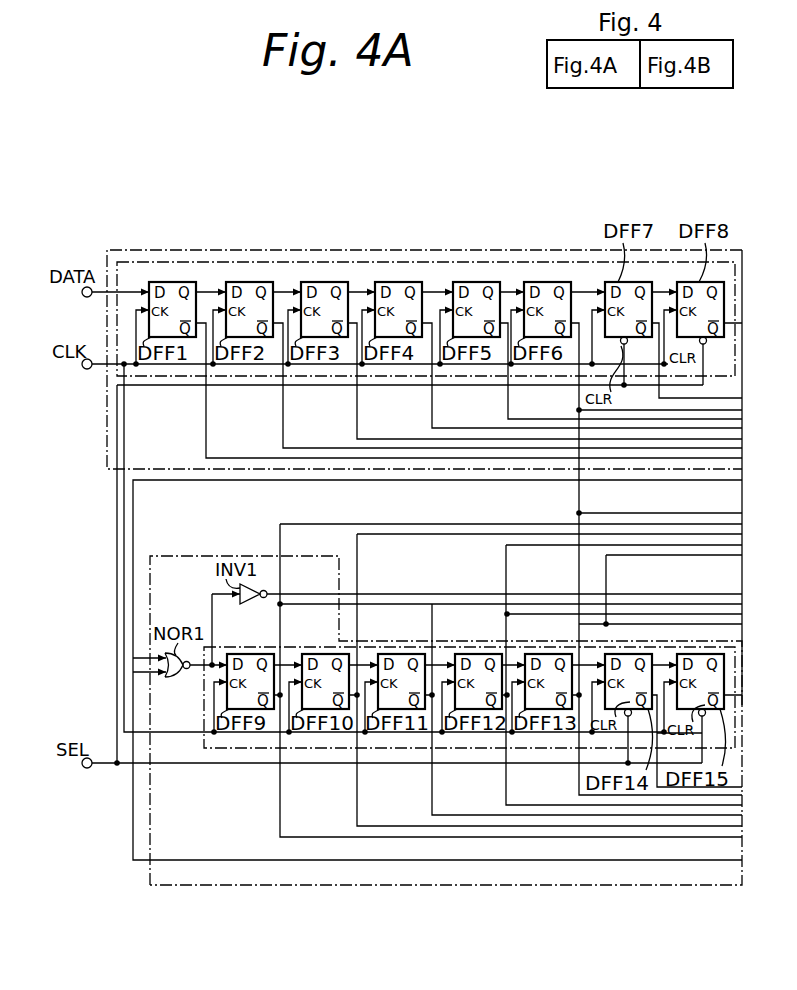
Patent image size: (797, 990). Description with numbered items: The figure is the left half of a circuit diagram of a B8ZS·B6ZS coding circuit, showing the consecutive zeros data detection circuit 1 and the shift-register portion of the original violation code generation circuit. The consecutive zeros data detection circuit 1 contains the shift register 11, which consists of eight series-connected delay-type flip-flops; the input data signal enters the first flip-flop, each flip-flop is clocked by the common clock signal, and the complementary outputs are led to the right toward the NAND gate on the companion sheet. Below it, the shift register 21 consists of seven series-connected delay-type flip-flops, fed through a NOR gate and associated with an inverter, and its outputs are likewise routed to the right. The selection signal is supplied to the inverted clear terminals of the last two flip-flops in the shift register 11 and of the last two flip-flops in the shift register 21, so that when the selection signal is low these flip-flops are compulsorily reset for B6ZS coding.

The consecutive zeros data detection circuit 1 is at (370, 250).
The shift register 11 is at (497, 262).
The shift register 21 is at (232, 749).